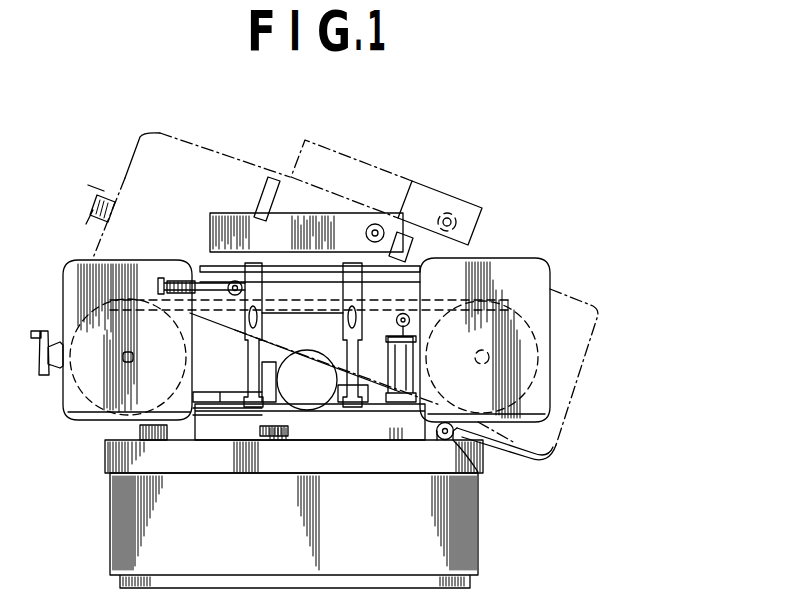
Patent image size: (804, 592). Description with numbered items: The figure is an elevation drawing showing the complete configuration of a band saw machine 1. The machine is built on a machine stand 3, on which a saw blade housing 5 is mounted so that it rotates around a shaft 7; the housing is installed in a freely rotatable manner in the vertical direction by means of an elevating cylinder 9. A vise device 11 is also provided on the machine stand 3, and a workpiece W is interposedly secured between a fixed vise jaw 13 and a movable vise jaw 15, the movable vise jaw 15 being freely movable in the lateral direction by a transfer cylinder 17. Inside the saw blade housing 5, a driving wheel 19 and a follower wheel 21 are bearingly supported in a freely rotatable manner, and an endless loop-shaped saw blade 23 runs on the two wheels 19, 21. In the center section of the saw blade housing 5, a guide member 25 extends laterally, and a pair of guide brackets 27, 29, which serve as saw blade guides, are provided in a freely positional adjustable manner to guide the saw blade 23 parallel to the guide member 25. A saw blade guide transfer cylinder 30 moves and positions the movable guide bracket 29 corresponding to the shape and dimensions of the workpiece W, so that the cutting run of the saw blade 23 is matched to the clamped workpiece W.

The band saw machine 1 is at (488, 148).
The machine stand 3 is at (467, 550).
The saw blade housing 5 is at (516, 258).
The shaft 7 is at (455, 442).
The elevating cylinder 9 is at (420, 358).
The vise device 11 is at (312, 432).
The fixed vise jaw 13 is at (366, 402).
The movable vise jaw 15 is at (262, 362).
The transfer cylinder 17 is at (110, 420).
The driving wheel 19 is at (523, 327).
The follower wheel 21 is at (95, 318).
The saw blade 23 is at (213, 408).
The guide member 25 is at (322, 280).
The guide bracket 27 is at (385, 270).
The movable guide bracket 29 is at (252, 263).
The saw blade guide transfer cylinder 30 is at (178, 282).
The workpiece W is at (286, 412).